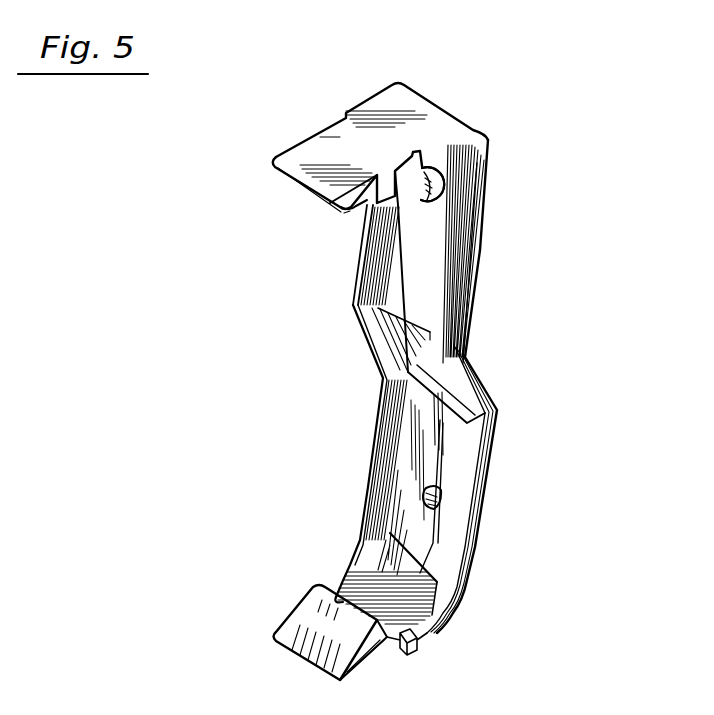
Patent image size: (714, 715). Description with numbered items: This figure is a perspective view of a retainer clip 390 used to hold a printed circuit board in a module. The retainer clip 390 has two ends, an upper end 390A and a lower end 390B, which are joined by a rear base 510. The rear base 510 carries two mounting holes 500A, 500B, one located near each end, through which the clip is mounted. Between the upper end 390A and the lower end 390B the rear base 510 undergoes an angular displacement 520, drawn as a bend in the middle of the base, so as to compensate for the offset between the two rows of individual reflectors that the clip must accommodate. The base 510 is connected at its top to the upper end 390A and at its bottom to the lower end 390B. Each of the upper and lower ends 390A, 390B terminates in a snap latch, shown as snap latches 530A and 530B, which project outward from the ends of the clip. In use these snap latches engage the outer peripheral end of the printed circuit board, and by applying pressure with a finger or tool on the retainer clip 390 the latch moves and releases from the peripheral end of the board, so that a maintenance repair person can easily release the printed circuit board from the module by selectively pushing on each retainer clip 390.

The retainer clip 390 is at (532, 138).
The upper end 390A is at (350, 152).
The lower end 390B is at (387, 608).
The mounting hole 500A is at (440, 188).
The mounting hole 500B is at (437, 491).
The rear base 510 is at (418, 269).
The angular displacement 520 is at (413, 370).
The snap latch 530A is at (363, 204).
The snap latch 530B is at (327, 637).